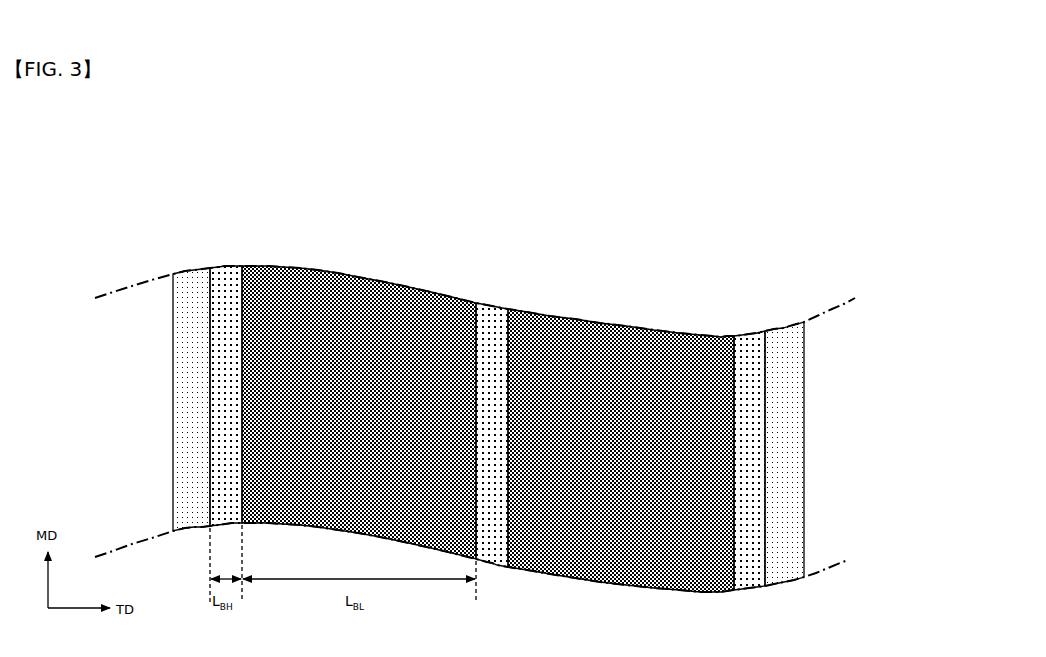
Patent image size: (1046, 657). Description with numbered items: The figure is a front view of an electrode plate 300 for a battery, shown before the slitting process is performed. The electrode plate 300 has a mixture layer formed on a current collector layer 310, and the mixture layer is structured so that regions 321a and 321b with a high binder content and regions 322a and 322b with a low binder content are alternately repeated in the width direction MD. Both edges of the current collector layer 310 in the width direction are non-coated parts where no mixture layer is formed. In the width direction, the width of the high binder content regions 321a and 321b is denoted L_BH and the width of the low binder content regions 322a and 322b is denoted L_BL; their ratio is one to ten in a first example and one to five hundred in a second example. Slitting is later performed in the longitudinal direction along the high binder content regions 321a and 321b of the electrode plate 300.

The electrode plate 300 is at (59, 172).
The current collector layer 310 is at (805, 449).
The region with a high binder content 321a is at (226, 286).
The region with a high binder content 321b is at (493, 326).
The region with a low binder content 322a is at (350, 302).
The region with a low binder content 322b is at (628, 346).